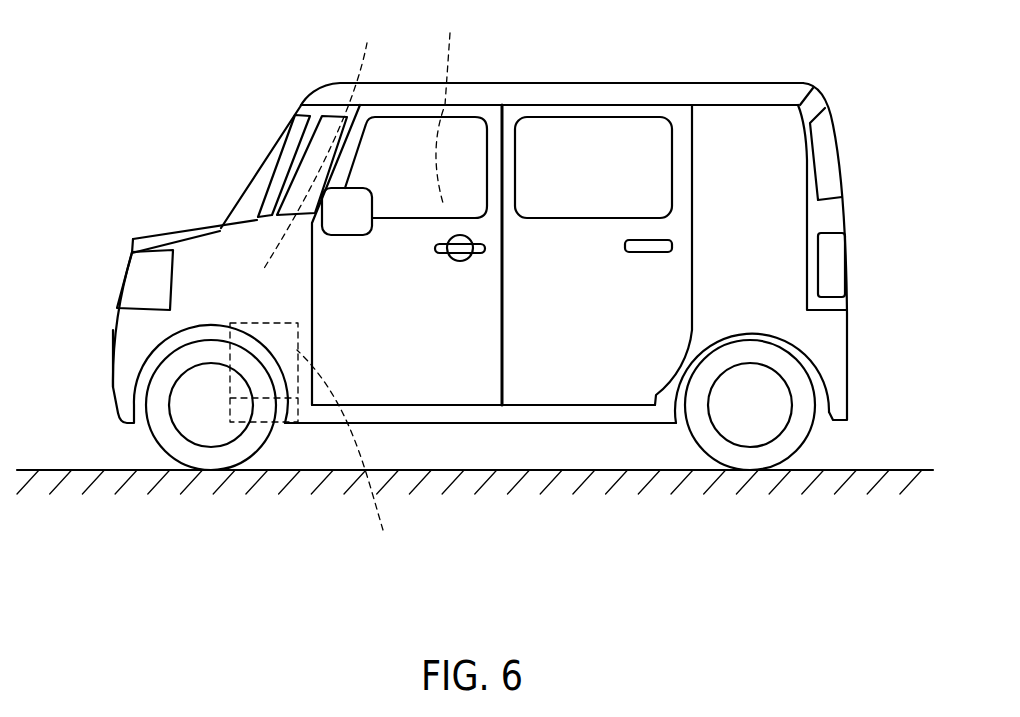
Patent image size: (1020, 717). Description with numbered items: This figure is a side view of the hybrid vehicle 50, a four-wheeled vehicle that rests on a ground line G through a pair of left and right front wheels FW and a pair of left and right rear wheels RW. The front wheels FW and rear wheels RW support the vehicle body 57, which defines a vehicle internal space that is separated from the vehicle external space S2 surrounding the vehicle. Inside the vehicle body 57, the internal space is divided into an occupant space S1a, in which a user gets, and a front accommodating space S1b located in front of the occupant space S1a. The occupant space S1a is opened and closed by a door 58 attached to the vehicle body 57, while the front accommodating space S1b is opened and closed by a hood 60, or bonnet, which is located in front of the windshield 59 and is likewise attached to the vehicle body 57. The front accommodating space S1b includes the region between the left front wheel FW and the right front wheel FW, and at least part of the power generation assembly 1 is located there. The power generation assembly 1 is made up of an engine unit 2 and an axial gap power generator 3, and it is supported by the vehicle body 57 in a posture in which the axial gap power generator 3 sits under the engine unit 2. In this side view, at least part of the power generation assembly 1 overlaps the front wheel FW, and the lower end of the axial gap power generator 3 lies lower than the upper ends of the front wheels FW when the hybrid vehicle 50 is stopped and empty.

The hybrid vehicle 50 is at (232, 143).
The windshield 59 is at (280, 130).
The hood 60 is at (180, 230).
The vehicle body 57 is at (598, 423).
The door 58 is at (472, 383).
The vehicle external space S2 is at (29, 375).
The occupant space S1a is at (447, 103).
The front accommodating space S1b is at (325, 136).
The power generation assembly 1 is at (302, 562).
The engine unit 2 is at (346, 459).
The axial gap power generator 3 is at (298, 422).
The front wheel FW is at (207, 457).
The rear wheel RW is at (755, 455).
The ground G is at (862, 470).